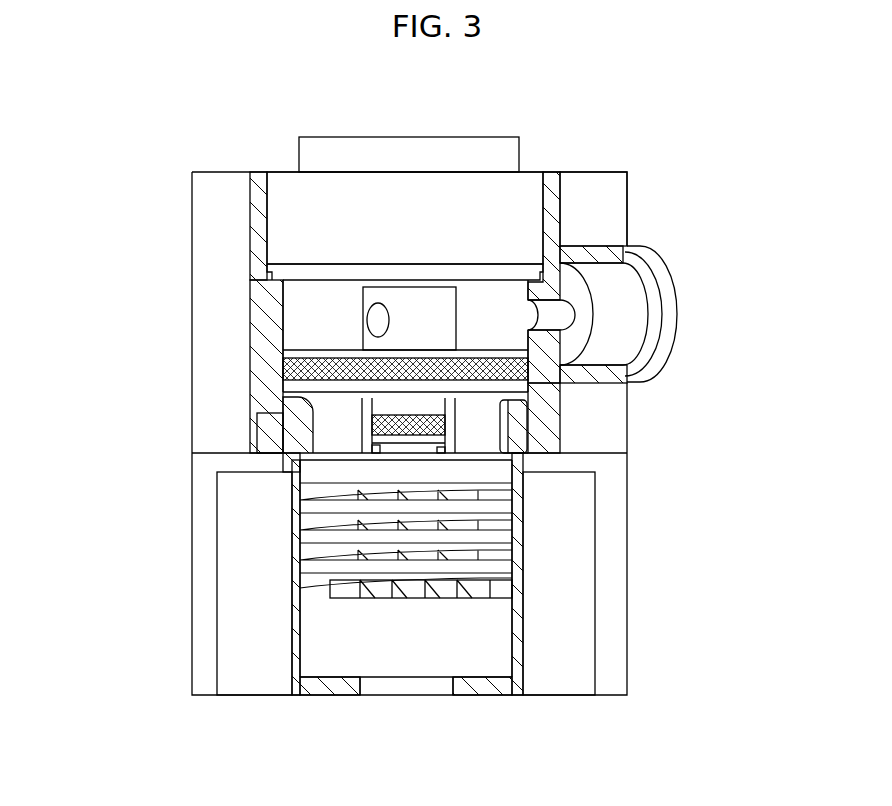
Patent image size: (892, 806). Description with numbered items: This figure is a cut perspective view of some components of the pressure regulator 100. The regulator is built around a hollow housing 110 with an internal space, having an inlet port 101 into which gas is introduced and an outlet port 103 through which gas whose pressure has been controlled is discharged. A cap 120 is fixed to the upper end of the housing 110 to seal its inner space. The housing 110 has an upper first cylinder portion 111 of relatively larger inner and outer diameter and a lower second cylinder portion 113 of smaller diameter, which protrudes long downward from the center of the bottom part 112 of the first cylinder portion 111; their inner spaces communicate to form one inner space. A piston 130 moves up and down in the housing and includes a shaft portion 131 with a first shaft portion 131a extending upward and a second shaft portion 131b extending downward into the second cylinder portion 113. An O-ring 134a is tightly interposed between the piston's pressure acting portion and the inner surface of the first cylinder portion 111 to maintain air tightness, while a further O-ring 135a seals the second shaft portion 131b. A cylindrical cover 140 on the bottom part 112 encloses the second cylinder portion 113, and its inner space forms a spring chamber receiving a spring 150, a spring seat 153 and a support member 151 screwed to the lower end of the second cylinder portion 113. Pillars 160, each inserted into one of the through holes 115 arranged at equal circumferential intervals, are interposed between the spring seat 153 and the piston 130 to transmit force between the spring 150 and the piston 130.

The pressure regulator 100 is at (620, 114).
The inlet port 101 is at (397, 577).
The outlet port 103 is at (622, 283).
The housing 110 is at (418, 392).
The first cylinder portion 111 is at (265, 303).
The bottom part 112 is at (302, 440).
The second cylinder portion 113 is at (447, 588).
The through holes 115 is at (310, 400).
The cap 120 is at (333, 222).
The piston 130 is at (413, 283).
The shaft portion 131 is at (298, 355).
The first shaft portion 131a is at (443, 310).
The second shaft portion 131b is at (523, 410).
The O-ring 134a is at (283, 368).
The O-ring 135a is at (403, 428).
The cover 140 is at (285, 657).
The spring 150 is at (502, 538).
The support member 151 is at (485, 650).
The spring seat 153 is at (505, 470).
The pillars 160 is at (340, 442).